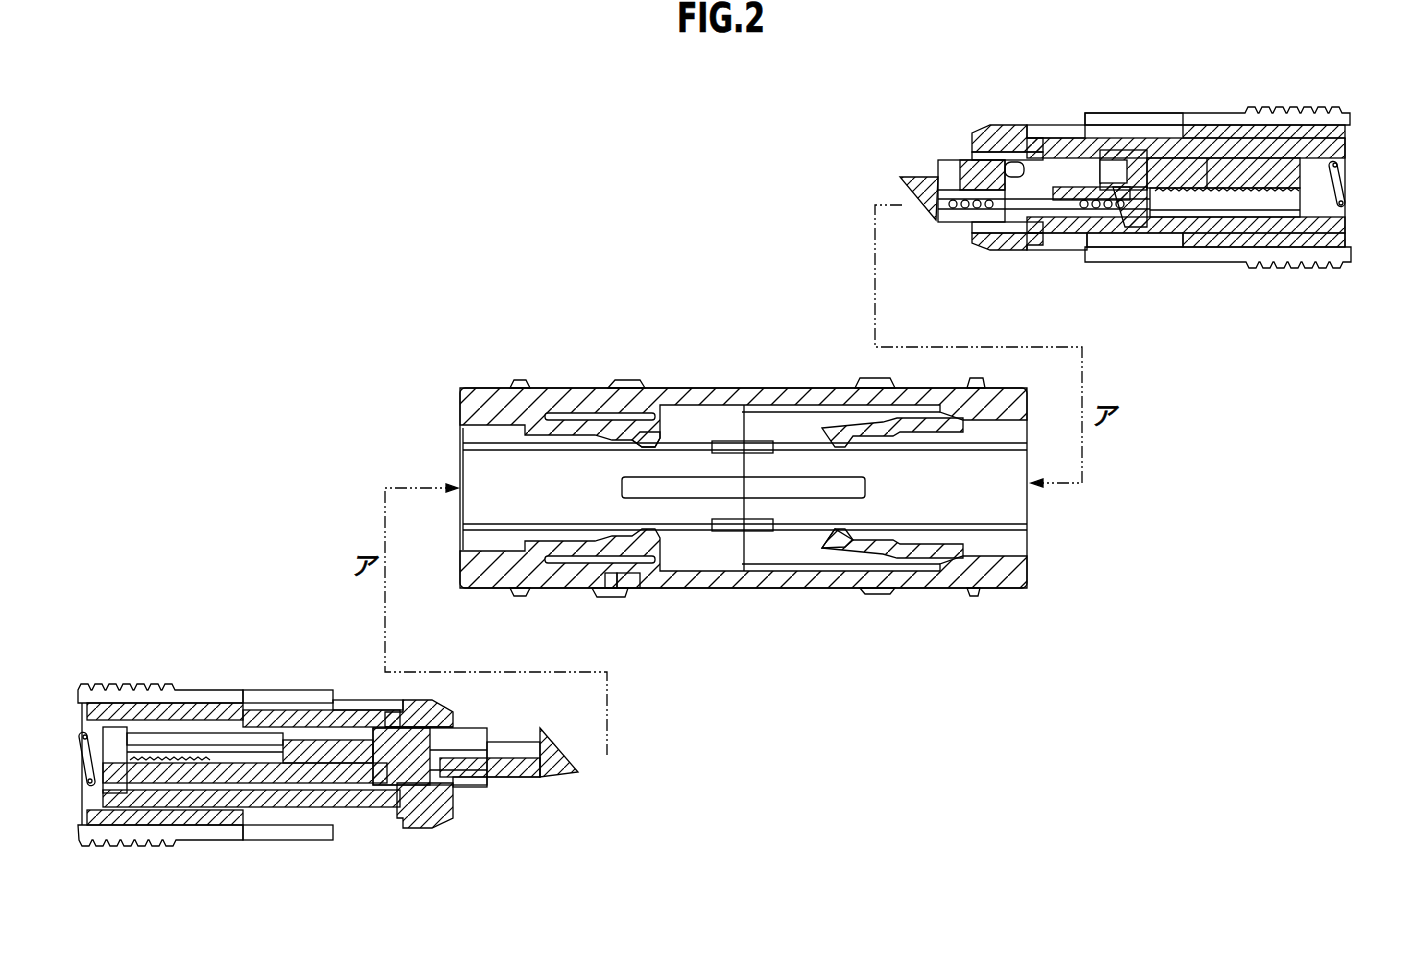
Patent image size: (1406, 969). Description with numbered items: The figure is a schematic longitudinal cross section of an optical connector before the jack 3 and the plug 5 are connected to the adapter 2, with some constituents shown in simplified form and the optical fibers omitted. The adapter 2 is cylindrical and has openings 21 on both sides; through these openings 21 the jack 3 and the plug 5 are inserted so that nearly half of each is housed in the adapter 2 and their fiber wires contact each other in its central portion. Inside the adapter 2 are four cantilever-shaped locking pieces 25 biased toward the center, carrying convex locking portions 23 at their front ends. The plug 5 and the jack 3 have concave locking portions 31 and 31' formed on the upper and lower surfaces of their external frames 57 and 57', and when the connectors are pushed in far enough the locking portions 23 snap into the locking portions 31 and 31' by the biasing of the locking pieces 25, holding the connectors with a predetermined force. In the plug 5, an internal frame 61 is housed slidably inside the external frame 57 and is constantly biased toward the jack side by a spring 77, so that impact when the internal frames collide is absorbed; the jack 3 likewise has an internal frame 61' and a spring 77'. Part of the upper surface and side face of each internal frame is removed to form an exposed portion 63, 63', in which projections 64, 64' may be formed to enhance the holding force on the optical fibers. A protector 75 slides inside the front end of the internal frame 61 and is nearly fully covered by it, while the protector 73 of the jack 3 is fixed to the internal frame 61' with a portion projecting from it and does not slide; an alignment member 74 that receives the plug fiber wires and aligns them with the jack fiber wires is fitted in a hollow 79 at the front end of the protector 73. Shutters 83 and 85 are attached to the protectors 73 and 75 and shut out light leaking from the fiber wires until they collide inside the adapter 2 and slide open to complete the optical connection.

The adapter 2 is at (935, 604).
The jack 3 is at (205, 682).
The plug 5 is at (1210, 282).
The openings 21 is at (458, 461).
The locking portions 23 is at (655, 446).
The locking pieces 25 is at (604, 430).
The locking portion 31 is at (1027, 158).
The external frame 57 is at (1186, 220).
The internal frame 61 is at (1215, 208).
The exposed portion 63 is at (1176, 147).
The projections 64 is at (1218, 205).
The protector 73 is at (473, 779).
The alignment member 74 is at (520, 775).
The protector 75 is at (985, 152).
The spring 77 is at (1359, 205).
The hollow 79 is at (517, 748).
The shutter 83 is at (580, 772).
The shutter 85 is at (905, 174).
The locking portion 31' is at (382, 726).
The external frame 57' is at (259, 786).
The internal frame 61' is at (230, 727).
The exposed portion 63' is at (245, 807).
The projections 64' is at (205, 748).
The spring 77' is at (62, 724).